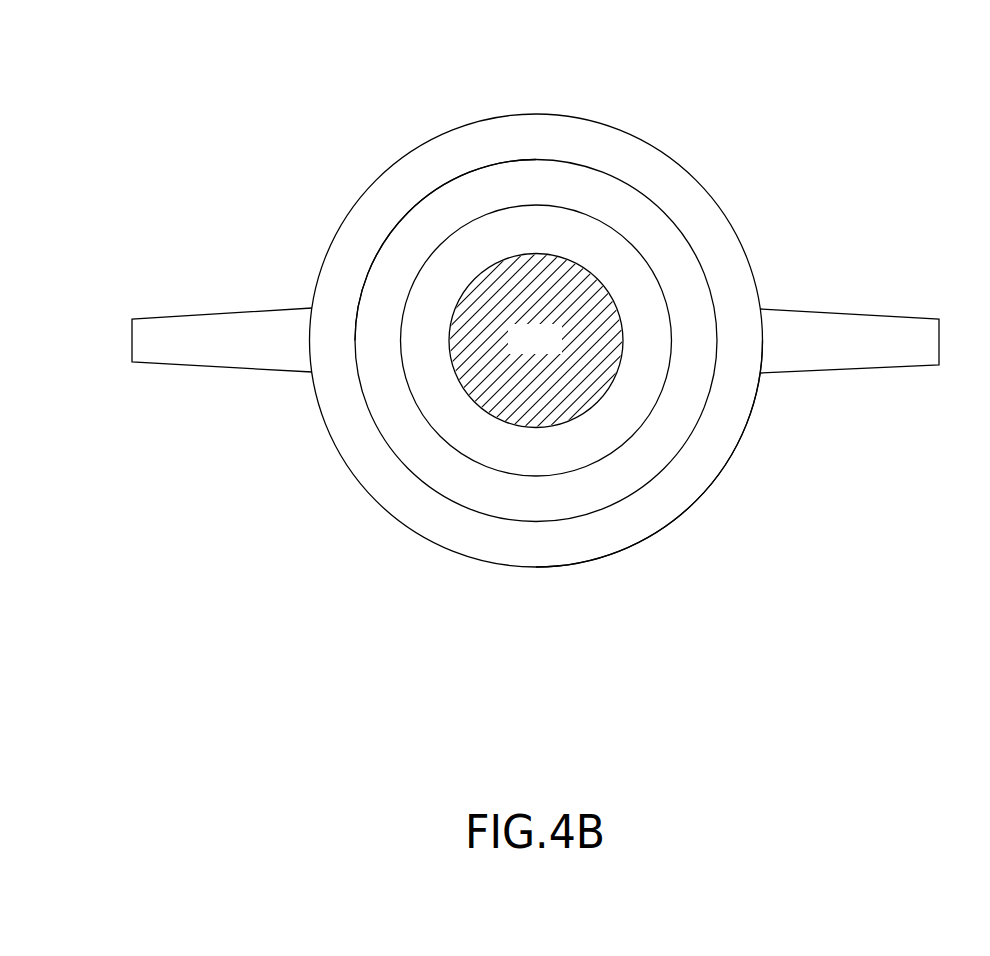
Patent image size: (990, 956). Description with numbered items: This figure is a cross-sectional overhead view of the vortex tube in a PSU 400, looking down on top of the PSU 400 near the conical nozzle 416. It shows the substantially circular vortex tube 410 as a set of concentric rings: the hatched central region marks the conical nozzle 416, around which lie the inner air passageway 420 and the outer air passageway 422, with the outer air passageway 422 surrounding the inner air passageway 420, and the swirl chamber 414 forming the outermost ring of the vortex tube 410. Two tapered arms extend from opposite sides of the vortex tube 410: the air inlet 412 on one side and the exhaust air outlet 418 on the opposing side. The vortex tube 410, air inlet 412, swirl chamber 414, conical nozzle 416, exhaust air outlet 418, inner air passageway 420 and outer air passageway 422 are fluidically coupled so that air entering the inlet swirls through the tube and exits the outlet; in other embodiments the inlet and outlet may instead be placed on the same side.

The PSU 400 is at (729, 86).
The vortex tube 410 is at (538, 160).
The air inlet 412 is at (895, 315).
The swirl chamber 414 is at (715, 438).
The conical nozzle 416 is at (554, 350).
The exhaust air outlet 418 is at (180, 313).
The inner air passageway 420 is at (593, 240).
The outer air passageway 422 is at (417, 233).